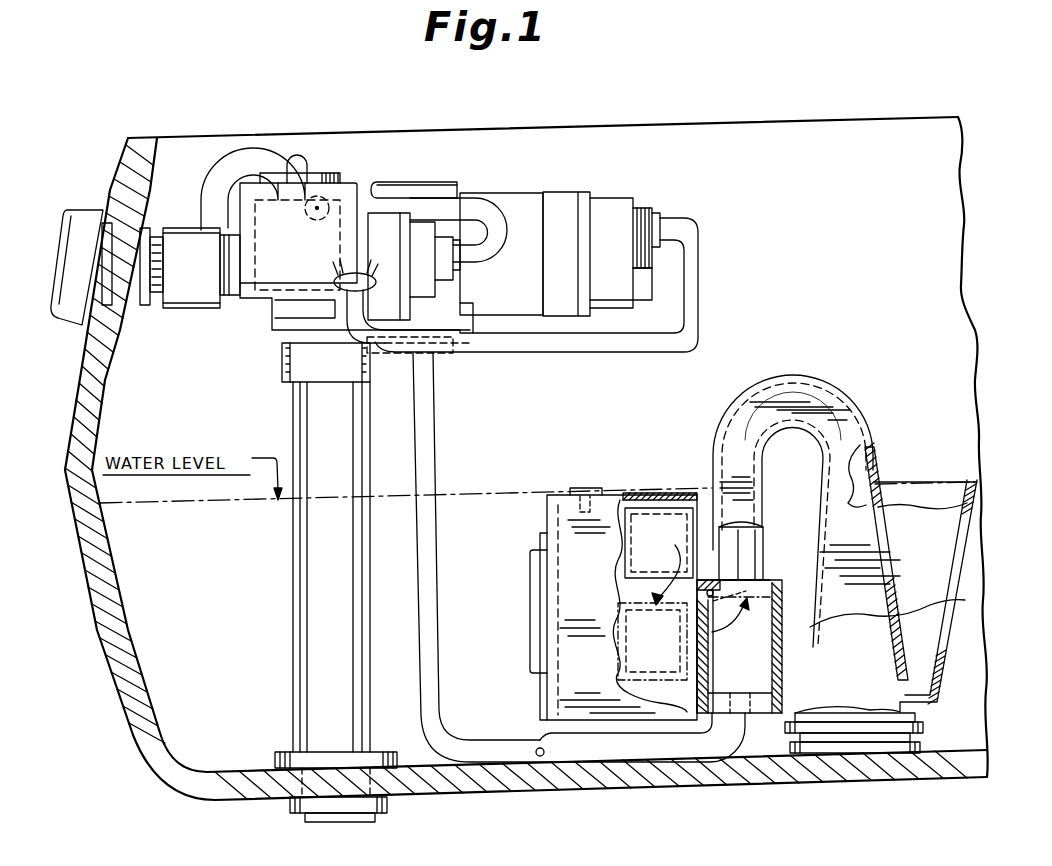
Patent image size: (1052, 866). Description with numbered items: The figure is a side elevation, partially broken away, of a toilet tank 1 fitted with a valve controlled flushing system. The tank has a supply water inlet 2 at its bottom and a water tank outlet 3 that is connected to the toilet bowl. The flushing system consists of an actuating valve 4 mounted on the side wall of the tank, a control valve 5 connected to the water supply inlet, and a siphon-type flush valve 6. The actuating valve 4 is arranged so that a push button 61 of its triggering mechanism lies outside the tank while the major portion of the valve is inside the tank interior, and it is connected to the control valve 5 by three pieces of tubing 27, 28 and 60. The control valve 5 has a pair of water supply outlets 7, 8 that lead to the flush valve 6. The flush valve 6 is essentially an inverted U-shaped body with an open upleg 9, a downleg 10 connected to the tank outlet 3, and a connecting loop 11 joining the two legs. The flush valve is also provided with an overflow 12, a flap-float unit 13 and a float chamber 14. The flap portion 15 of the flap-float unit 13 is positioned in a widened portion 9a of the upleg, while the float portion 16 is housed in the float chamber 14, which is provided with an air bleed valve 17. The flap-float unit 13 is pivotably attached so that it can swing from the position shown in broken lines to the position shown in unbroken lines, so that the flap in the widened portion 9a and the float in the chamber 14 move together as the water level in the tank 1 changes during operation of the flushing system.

The toilet tank 1 is at (114, 157).
The supply water inlet 2 is at (340, 823).
The water tank outlet 3 is at (233, 833).
The actuating valve 4 is at (322, 266).
The control valve 5 is at (552, 192).
The siphon-type flush valve 6 is at (848, 394).
The water supply outlet 7 is at (516, 750).
The water supply outlet 8 is at (558, 745).
The open upleg 9 is at (766, 561).
The widened portion of the upleg 9a is at (783, 597).
The downleg 10 is at (876, 467).
The connecting loop 11 is at (772, 385).
The overflow 12 is at (948, 660).
The flap-float unit 13 is at (616, 569).
The float chamber 14 is at (547, 513).
The flap portion 15 is at (712, 652).
The float portion 16 is at (667, 508).
The air bleed valve 17 is at (596, 488).
The tubing 27 is at (507, 247).
The tubing 28 is at (699, 298).
The tubing 60 is at (204, 214).
The push button 61 is at (99, 208).